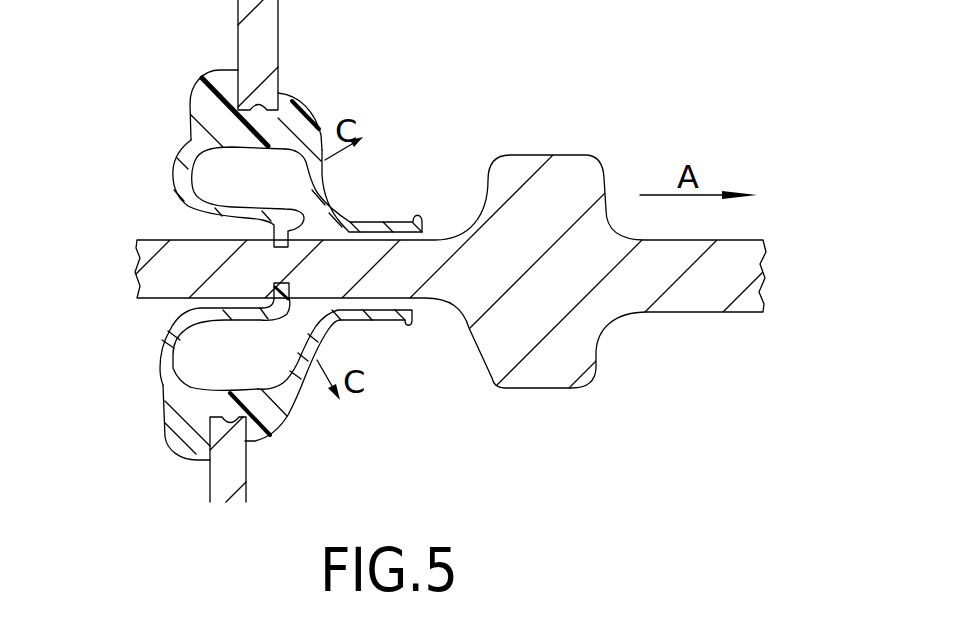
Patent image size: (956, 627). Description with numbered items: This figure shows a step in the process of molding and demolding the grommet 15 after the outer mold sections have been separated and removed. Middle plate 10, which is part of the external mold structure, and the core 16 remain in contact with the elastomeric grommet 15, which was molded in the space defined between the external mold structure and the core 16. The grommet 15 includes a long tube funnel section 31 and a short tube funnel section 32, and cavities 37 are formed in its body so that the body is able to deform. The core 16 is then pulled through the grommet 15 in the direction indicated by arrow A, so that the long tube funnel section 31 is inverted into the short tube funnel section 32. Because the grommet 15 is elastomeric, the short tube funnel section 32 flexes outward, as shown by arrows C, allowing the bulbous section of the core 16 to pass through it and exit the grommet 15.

The middle plate 10 is at (278, 39).
The grommet 15 is at (360, 84).
The core 16 is at (562, 300).
The long tube funnel section 31 is at (182, 197).
The short tube funnel section 32 is at (324, 175).
The cavities 37 is at (215, 353).